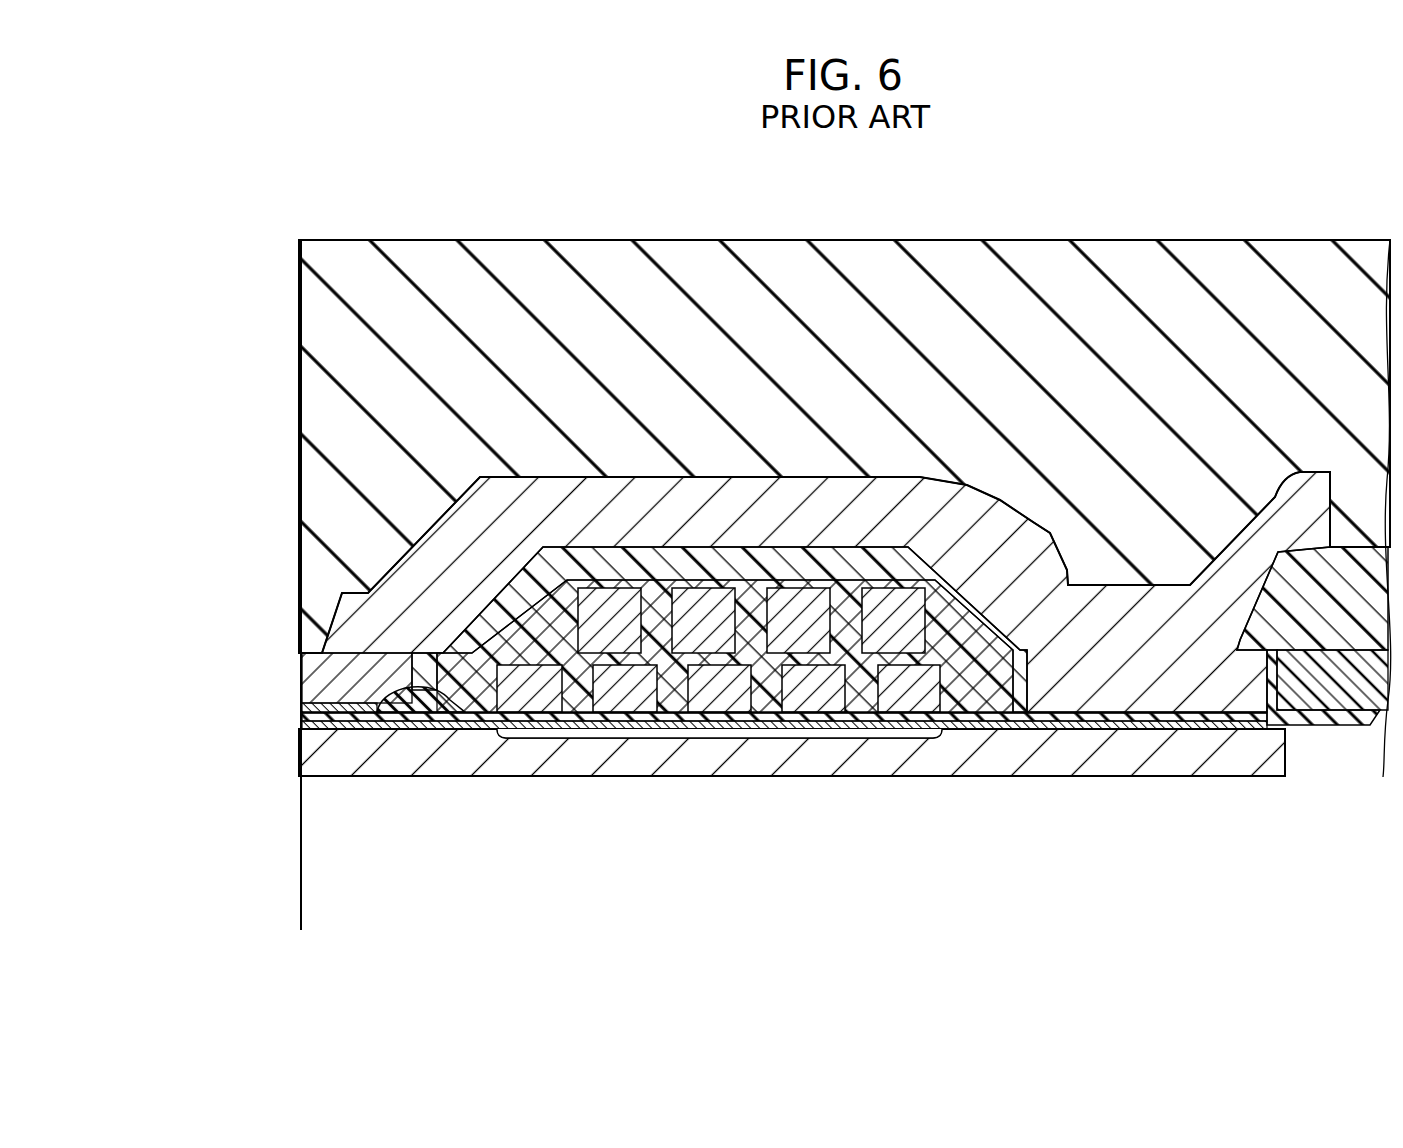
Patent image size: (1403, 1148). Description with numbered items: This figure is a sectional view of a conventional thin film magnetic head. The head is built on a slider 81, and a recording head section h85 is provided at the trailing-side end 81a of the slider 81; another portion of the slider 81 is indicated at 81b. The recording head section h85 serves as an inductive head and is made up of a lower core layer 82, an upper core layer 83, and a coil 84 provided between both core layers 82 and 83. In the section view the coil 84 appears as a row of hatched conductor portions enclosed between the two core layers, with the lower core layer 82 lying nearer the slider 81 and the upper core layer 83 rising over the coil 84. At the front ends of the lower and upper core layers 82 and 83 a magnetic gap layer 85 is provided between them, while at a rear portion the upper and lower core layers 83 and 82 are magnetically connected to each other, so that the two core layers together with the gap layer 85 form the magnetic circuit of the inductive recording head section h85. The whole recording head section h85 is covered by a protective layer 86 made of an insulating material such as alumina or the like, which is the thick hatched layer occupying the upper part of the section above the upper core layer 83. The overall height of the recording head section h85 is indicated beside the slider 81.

The slider 81 is at (292, 847).
The trailing-side end 81a is at (497, 778).
The side surface of substrate 81b is at (301, 882).
The lower core layer 82 is at (1222, 752).
The upper core layer 83 is at (968, 592).
The coil 84 is at (745, 580).
The magnetic gap layer 85 is at (303, 710).
The protective layer 86 is at (487, 297).
The recording head section h85 is at (480, 476).